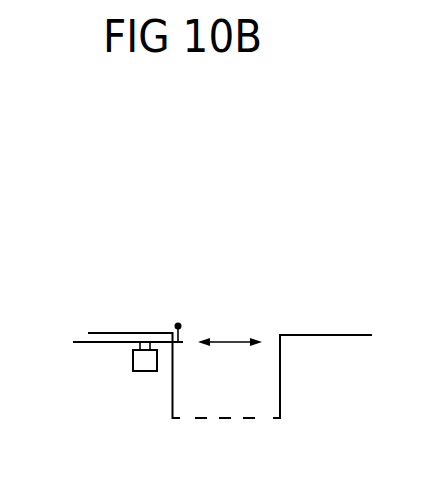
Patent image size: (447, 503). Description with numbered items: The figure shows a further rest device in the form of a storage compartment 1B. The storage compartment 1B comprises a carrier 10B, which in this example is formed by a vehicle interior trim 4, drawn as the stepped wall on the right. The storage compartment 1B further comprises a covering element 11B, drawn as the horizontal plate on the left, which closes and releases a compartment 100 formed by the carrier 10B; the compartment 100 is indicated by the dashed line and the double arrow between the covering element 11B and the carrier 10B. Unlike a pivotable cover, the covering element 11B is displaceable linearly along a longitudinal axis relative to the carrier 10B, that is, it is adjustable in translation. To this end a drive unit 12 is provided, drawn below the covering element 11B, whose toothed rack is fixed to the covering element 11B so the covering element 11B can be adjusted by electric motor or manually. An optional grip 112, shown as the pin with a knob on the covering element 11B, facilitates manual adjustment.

The storage compartment 1B is at (136, 318).
The covering element 11B is at (78, 338).
The grip 112 is at (187, 315).
The drive unit 12 is at (136, 382).
The compartment 100 is at (249, 407).
The vehicle interior trim 4 is at (331, 333).
The carrier 10B is at (333, 327).